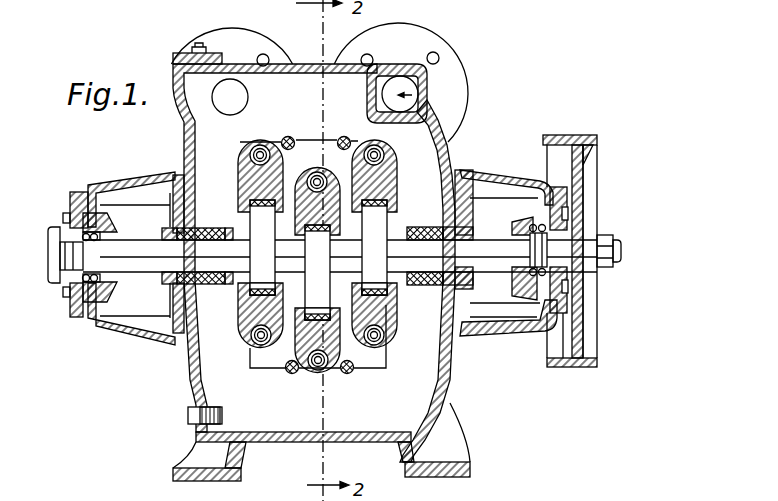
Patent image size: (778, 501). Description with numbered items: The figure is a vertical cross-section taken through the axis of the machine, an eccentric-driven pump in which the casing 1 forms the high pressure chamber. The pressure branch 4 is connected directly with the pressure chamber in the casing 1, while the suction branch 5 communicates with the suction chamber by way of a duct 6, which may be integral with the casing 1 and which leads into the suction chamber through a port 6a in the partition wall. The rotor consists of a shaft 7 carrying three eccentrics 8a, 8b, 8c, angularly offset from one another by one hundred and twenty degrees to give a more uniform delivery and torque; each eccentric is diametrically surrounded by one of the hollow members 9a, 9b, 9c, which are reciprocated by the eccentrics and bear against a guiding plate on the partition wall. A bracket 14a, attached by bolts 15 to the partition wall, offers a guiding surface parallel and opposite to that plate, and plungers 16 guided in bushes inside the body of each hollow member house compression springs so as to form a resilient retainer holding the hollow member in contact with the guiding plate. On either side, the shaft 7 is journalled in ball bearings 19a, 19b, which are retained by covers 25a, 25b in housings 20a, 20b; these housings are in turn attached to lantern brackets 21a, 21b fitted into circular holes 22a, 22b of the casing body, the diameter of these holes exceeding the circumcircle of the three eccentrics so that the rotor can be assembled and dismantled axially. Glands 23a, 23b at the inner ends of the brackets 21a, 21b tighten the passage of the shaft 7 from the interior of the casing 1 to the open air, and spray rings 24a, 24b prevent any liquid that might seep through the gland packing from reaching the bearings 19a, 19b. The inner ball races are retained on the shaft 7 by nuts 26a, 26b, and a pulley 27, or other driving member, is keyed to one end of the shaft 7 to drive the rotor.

The casing 1 is at (420, 441).
The pressure branch 4 is at (270, 47).
The suction branch 5 is at (360, 47).
The duct 6 is at (385, 110).
The port 6a is at (405, 82).
The shaft 7 is at (541, 180).
The eccentric 8a is at (258, 275).
The eccentric 8b is at (297, 352).
The eccentric 8c is at (396, 310).
The hollow member 9a is at (262, 328).
The hollow member 9b is at (316, 372).
The hollow member 9c is at (393, 340).
The bracket 14a is at (370, 360).
The bolts 15 is at (347, 373).
The plungers 16 is at (387, 150).
The ball bearing 19a is at (556, 206).
The ball bearing 19b is at (103, 195).
The housing 20a is at (532, 333).
The housing 20b is at (120, 297).
The lantern bracket 21a is at (495, 337).
The lantern bracket 21b is at (177, 347).
The circular hole 22a is at (490, 245).
The circular hole 22b is at (178, 175).
The gland 23a is at (447, 225).
The gland 23b is at (190, 223).
The spray ring 24a is at (528, 277).
The spray ring 24b is at (140, 227).
The cover 25a is at (563, 367).
The cover 25b is at (83, 327).
The nut 26a is at (618, 268).
The nut 26b is at (55, 300).
The pulley 27 is at (590, 367).